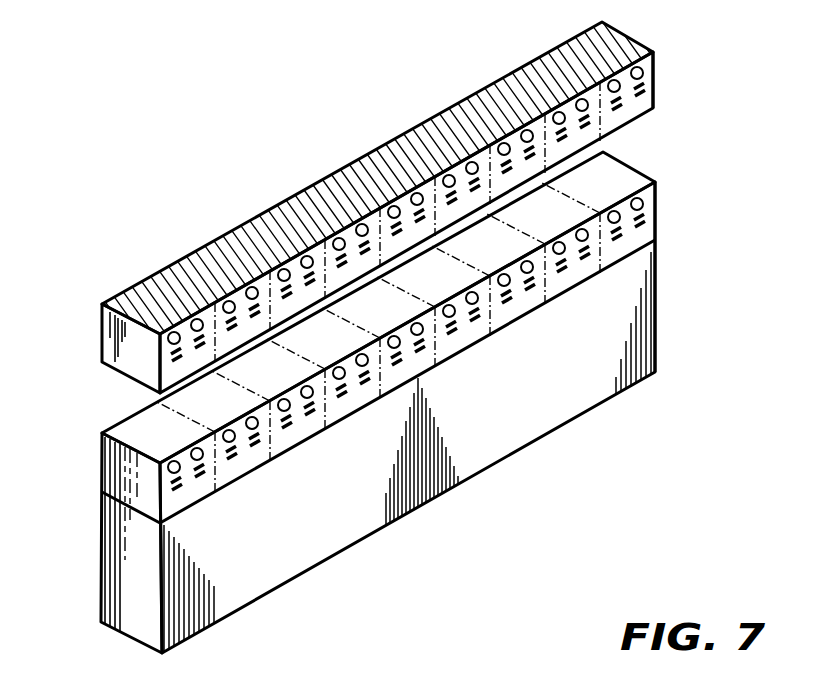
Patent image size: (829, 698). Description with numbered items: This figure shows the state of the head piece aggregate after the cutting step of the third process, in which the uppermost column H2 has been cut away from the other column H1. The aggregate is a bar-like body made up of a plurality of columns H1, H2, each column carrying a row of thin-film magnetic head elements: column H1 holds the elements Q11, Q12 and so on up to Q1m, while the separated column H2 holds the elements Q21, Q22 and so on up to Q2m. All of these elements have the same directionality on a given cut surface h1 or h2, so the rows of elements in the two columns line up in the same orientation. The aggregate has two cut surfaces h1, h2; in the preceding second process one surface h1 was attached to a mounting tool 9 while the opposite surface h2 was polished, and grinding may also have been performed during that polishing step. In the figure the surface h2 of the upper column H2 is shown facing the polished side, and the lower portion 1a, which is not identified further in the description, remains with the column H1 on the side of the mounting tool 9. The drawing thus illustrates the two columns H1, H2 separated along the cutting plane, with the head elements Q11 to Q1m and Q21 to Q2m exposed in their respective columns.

The ceramic block body 1a is at (113, 342).
The mounting tool 9 is at (442, 465).
The column H1 is at (657, 202).
The uppermost column H2 is at (656, 74).
The cut surface h1 is at (638, 250).
The cut surface h2 is at (412, 143).
The thin-film magnetic head element Q11 is at (175, 447).
The thin-film magnetic head element Q12 is at (227, 416).
The thin-film magnetic head element Q1m is at (622, 193).
The thin-film magnetic head element Q21 is at (178, 328).
The thin-film magnetic head element Q22 is at (240, 292).
The thin-film magnetic head element Q2m is at (650, 63).